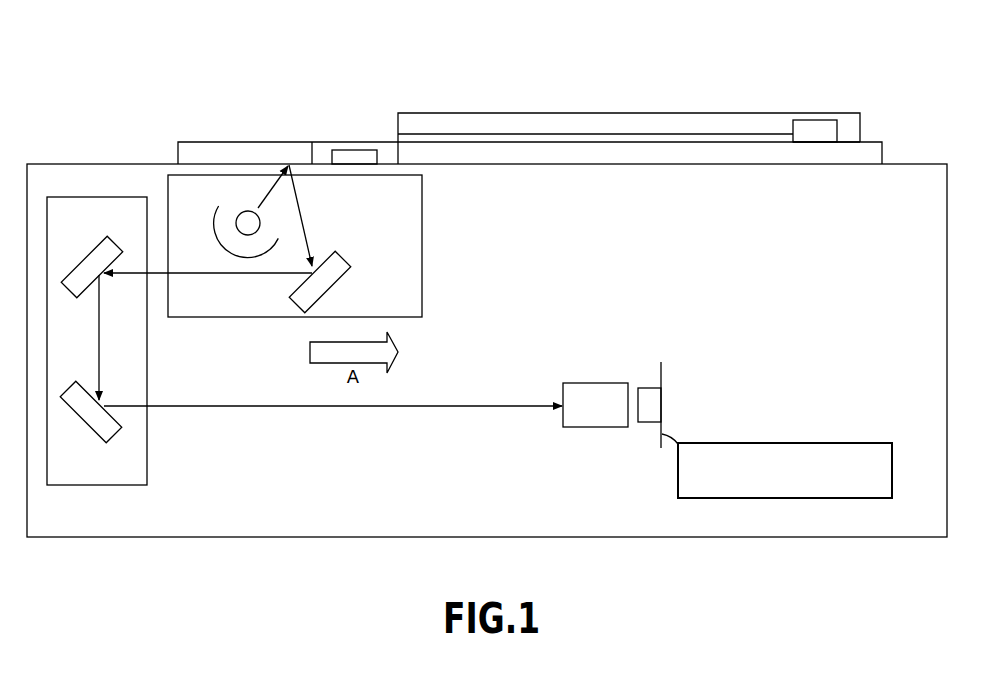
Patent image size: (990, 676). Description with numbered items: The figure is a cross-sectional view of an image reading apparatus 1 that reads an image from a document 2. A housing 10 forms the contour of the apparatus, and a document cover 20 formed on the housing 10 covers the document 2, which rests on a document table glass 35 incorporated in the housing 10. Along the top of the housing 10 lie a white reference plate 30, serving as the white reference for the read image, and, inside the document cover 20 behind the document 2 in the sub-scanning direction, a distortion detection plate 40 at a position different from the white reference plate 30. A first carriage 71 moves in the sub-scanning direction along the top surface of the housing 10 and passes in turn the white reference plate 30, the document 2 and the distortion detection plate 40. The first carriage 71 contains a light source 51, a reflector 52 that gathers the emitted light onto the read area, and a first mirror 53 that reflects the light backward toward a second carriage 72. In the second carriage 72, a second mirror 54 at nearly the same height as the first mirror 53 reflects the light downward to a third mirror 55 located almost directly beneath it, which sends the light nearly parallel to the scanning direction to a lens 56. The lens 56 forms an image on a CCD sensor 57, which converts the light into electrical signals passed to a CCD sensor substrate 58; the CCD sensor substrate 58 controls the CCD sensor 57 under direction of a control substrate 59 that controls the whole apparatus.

The image reading apparatus 1 is at (487, 277).
The document 2 is at (683, 133).
The housing 10 is at (927, 163).
The document cover 20 is at (847, 113).
The white reference plate 30 is at (357, 149).
The document table glass 35 is at (663, 167).
The distortion detection plate 40 is at (807, 119).
The light source 51 is at (242, 211).
The reflector 52 is at (222, 247).
The first mirror 53 is at (337, 282).
The second mirror 54 is at (87, 256).
The third mirror 55 is at (86, 428).
The lens 56 is at (572, 382).
The CCD sensor 57 is at (643, 387).
The CCD sensor substrate 58 is at (662, 373).
The control substrate 59 is at (863, 442).
The first carriage 71 is at (423, 242).
The second carriage 72 is at (147, 362).